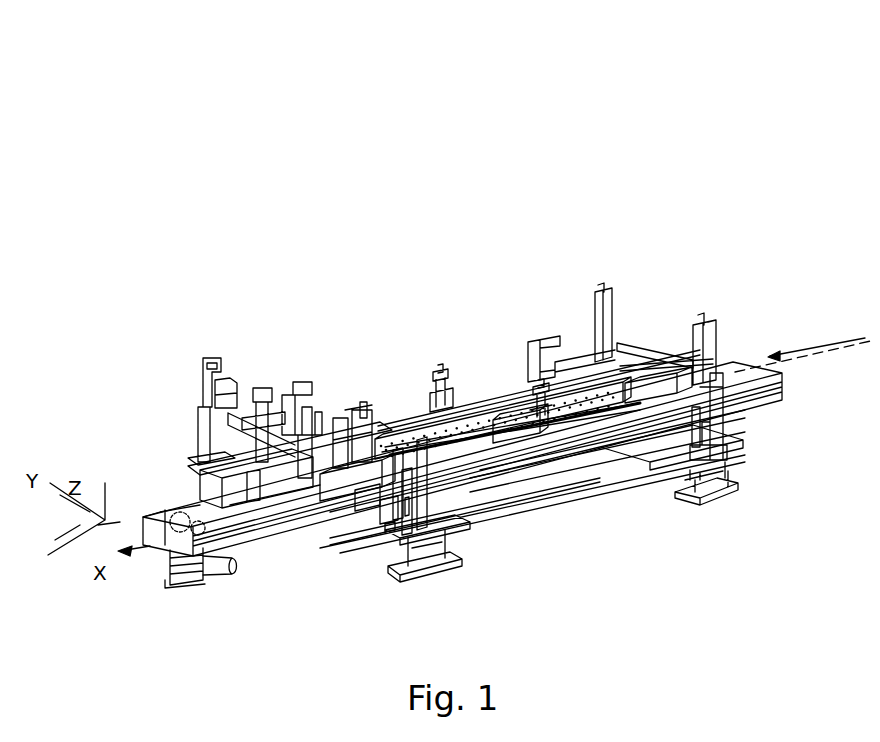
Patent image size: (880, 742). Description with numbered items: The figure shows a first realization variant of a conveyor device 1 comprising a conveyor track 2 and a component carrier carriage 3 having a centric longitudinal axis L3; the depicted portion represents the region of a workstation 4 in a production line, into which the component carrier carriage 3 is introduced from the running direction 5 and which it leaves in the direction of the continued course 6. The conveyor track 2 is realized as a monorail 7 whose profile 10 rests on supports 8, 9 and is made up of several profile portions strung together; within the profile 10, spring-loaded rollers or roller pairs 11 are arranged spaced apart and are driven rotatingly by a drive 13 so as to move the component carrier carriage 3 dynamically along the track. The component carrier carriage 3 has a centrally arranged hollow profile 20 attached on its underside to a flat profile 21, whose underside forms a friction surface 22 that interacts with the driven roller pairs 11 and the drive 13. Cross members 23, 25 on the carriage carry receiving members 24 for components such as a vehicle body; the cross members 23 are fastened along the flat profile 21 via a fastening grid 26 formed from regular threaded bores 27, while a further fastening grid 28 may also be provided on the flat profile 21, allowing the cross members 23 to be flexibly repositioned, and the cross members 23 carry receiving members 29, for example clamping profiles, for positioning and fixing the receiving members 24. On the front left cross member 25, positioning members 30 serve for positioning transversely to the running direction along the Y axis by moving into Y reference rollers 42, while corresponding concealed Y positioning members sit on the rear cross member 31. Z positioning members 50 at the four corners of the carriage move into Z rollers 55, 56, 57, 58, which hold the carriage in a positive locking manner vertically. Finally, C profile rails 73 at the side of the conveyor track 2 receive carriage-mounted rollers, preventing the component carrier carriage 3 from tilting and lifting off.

The conveyor device 1 is at (380, 70).
The conveyor track 2 is at (622, 482).
The component carrier carriage 3 is at (523, 393).
The workstation 4 is at (580, 226).
The running direction 5 is at (795, 354).
The continued course 6 is at (134, 560).
The monorail 7 is at (453, 485).
The support 8 is at (438, 568).
The support 9 is at (720, 500).
The profile 10 is at (230, 578).
The roller pairs 11 is at (165, 532).
The drive 13 is at (210, 578).
The hollow profile 20 is at (410, 423).
The flat profile 21 is at (265, 512).
The friction surface 22 is at (236, 524).
The cross member 23 is at (205, 475).
The receiving members 24 is at (208, 352).
The cross member 25 is at (358, 480).
The fastening grid 26 is at (455, 425).
The threaded bores 27 is at (585, 464).
The further fastening grid 28 is at (565, 460).
The receiving members 29 is at (200, 468).
The positioning members 30 is at (360, 500).
The rear cross member 31 is at (600, 380).
The Y reference rollers 42 is at (392, 524).
The Z positioning members 50 is at (386, 442).
The Z roller 55 is at (392, 512).
The Z roller 56 is at (716, 425).
The Z roller 57 is at (592, 378).
The Z roller 58 is at (210, 416).
The C profile rails 73 is at (508, 480).
The centric longitudinal axis L3 is at (792, 352).